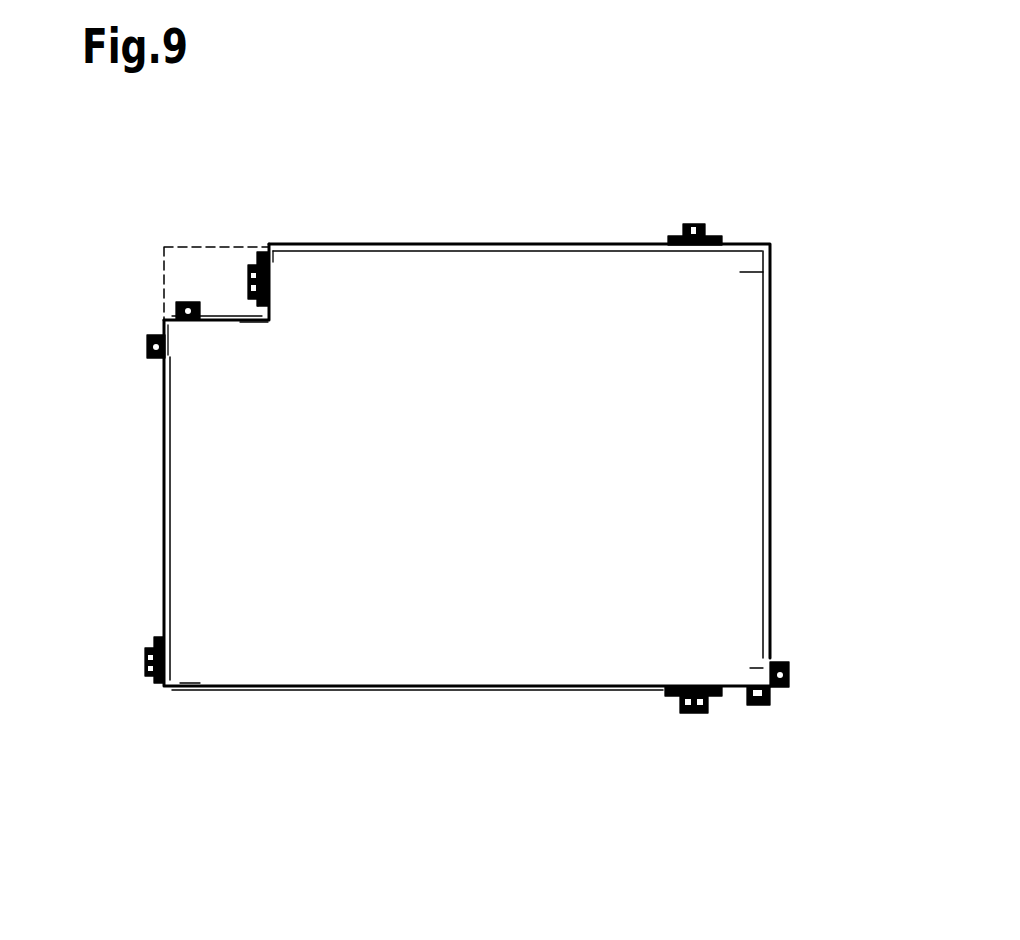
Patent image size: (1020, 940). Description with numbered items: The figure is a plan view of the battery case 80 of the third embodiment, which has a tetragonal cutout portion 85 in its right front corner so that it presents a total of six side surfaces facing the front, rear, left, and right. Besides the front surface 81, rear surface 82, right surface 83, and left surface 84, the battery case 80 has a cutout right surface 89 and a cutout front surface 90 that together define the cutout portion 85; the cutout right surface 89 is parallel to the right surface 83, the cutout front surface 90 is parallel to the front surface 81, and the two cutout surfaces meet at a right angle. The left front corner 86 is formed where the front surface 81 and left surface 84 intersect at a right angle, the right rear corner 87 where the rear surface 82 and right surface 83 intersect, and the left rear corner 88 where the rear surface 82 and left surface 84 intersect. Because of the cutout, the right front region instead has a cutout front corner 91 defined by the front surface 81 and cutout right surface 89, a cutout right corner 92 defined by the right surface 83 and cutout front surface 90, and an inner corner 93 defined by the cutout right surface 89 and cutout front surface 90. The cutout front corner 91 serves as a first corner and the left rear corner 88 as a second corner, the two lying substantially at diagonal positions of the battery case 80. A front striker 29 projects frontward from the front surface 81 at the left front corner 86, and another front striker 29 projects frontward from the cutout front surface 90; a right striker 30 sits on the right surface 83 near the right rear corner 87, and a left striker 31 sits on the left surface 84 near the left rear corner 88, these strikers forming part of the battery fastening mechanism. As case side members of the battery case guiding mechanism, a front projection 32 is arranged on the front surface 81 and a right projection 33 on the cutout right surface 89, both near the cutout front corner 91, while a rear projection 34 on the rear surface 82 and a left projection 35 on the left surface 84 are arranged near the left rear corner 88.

The front striker 29 is at (256, 262).
The right striker 30 is at (703, 225).
The left striker 31 is at (690, 712).
The front projection 32 is at (147, 347).
The right projection 33 is at (175, 312).
The rear projection 34 is at (790, 675).
The left projection 35 is at (755, 706).
The battery case 80 is at (579, 240).
The front surface 81 is at (163, 500).
The rear surface 82 is at (775, 462).
The right surface 83 is at (470, 244).
The left surface 84 is at (472, 690).
The cutout portion 85 is at (192, 262).
The left front corner 86 is at (190, 662).
The right rear corner 87 is at (740, 272).
The left rear corner 88 is at (750, 668).
The cutout right surface 89 is at (230, 314).
The cutout front surface 90 is at (265, 308).
The cutout front corner 91 is at (180, 335).
The cutout right corner 92 is at (283, 268).
The inner corner 93 is at (253, 308).